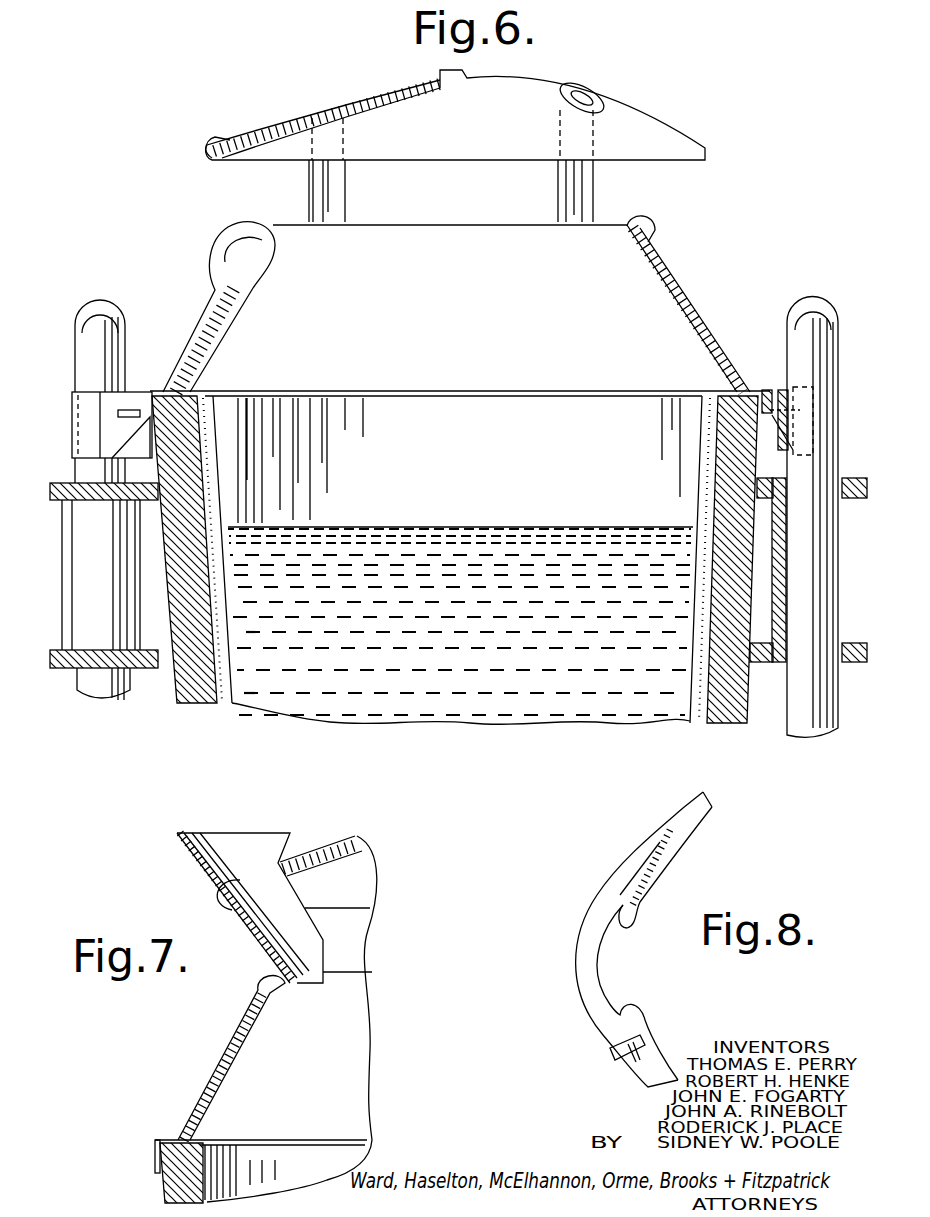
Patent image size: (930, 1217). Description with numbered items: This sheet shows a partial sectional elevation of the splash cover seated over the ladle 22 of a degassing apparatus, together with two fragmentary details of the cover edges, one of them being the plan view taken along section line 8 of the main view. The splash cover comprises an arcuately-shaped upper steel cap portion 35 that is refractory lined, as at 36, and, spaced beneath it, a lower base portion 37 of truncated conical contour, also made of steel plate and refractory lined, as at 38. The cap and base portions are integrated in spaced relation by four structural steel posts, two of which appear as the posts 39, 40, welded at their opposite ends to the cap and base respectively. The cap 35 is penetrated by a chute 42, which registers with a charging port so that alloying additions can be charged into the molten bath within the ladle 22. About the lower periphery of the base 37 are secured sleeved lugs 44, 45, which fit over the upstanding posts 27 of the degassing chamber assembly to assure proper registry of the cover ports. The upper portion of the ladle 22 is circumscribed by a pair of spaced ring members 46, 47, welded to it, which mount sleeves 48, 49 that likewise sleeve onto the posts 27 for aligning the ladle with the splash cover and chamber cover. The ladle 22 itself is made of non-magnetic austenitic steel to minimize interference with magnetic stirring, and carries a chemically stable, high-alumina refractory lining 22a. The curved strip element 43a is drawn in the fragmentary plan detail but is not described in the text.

In FIG. 6, the section line 8— 8 is at (277, 218).
In FIG. 6, the ladle 22 is at (216, 706).
In FIG. 7, the ladle 22 is at (162, 1186).
In FIG. 6, the refractory lining 22a is at (207, 458).
In FIG. 6, the upstanding posts 27 is at (788, 328).
In FIG. 6, the upper steel cap portion 35 is at (362, 96).
In FIG. 7, the upper steel cap portion 35 is at (330, 846).
In FIG. 6, the refractory lining of cap 36 is at (430, 150).
In FIG. 6, the lower base portion 37 is at (688, 306).
In FIG. 7, the lower base portion 37 is at (228, 1088).
In FIG. 8, the lower base portion 37 is at (668, 818).
In FIG. 6, the refractory lining of base 38 is at (665, 290).
In FIG. 6, the structural steel post 39 is at (344, 200).
In FIG. 6, the structural steel post 40 is at (562, 197).
In FIG. 7, the chute 42 is at (262, 940).
In FIG. 8, the curved clip 43a is at (612, 972).
In FIG. 6, the sleeved lug 44 is at (782, 388).
In FIG. 6, the sleeved lug 45 is at (73, 430).
In FIG. 6, the ring member 46 is at (68, 487).
In FIG. 6, the ring member 47 is at (62, 668).
In FIG. 6, the sleeve 48 is at (115, 582).
In FIG. 6, the sleeve 49 is at (780, 665).